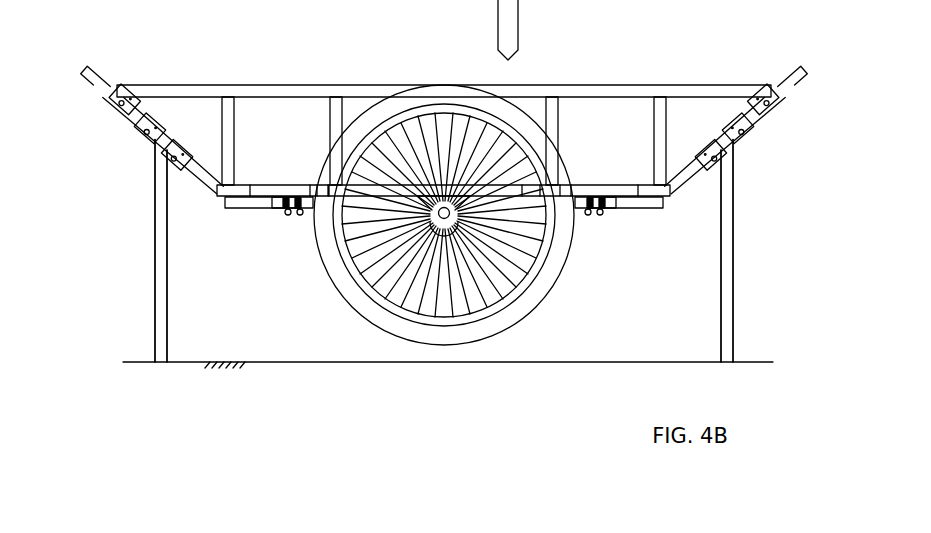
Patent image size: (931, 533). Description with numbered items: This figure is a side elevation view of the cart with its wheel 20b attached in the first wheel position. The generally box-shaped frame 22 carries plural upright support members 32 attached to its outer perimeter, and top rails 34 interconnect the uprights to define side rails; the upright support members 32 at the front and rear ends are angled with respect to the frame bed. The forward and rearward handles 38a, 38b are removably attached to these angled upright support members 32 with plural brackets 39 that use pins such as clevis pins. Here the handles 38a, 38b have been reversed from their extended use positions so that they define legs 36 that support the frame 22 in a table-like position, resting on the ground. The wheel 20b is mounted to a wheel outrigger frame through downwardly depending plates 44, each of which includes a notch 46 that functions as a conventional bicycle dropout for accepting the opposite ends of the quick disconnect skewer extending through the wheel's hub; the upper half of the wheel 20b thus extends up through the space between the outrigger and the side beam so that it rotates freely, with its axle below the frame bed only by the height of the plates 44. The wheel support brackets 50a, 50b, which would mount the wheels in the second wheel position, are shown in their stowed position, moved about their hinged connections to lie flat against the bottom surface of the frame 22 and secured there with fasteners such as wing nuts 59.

The wheel 20b is at (351, 351).
The frame 22 is at (116, 137).
The upright support member 32 is at (232, 128).
The top rail 34 is at (325, 85).
The leg 36 is at (155, 284).
The forward handle 38a is at (774, 174).
The rearward handle 38b is at (124, 198).
The bracket 39 is at (128, 90).
The plate 44 is at (456, 222).
The notch 46 is at (437, 222).
The wheel support bracket 50a is at (625, 240).
The wheel support bracket 50b is at (268, 238).
The wing nut 59 is at (300, 215).